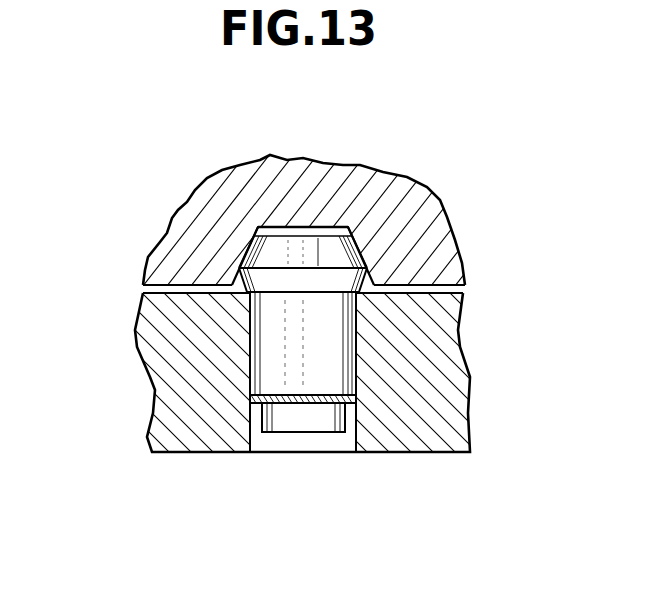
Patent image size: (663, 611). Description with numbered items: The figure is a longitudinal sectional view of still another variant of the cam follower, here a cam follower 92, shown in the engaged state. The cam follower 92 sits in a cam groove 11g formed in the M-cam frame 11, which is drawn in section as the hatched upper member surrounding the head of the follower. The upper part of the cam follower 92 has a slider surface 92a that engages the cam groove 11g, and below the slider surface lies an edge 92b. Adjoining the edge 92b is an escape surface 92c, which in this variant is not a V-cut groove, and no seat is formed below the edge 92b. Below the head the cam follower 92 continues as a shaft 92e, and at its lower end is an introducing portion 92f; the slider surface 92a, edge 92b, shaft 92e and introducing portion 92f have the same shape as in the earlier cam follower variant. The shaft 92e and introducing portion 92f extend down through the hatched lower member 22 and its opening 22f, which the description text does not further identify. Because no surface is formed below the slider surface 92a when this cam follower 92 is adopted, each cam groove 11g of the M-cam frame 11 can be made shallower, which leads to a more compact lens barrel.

The M-cam frame 11 is at (200, 210).
The cam groove 11g is at (256, 258).
The lower member 22 is at (172, 383).
The through hole 22f is at (250, 433).
The cam follower 92 is at (401, 300).
The slider surface 92a is at (428, 222).
The edge 92b is at (370, 272).
The escape surface 92c is at (380, 293).
The shaft 92e is at (357, 358).
The introducing portion 92f is at (345, 423).